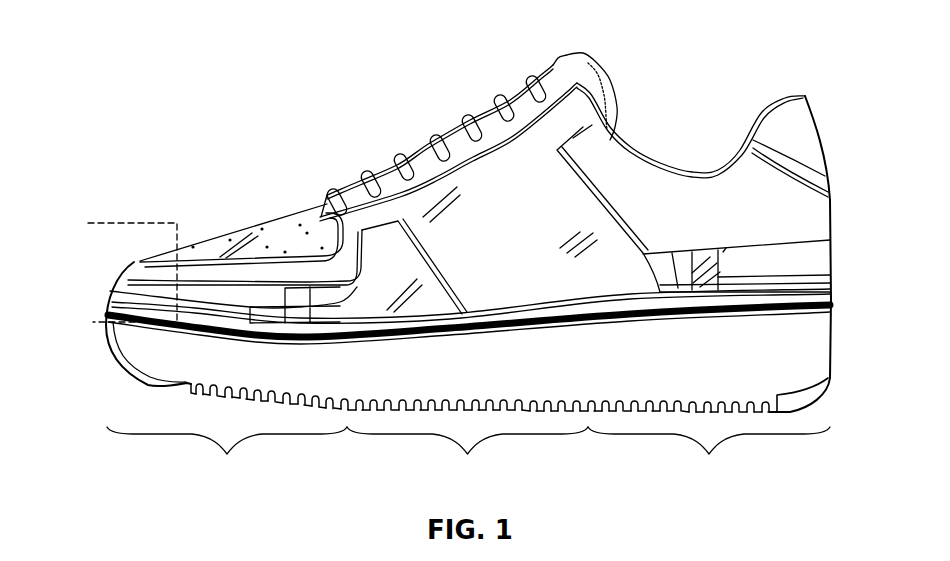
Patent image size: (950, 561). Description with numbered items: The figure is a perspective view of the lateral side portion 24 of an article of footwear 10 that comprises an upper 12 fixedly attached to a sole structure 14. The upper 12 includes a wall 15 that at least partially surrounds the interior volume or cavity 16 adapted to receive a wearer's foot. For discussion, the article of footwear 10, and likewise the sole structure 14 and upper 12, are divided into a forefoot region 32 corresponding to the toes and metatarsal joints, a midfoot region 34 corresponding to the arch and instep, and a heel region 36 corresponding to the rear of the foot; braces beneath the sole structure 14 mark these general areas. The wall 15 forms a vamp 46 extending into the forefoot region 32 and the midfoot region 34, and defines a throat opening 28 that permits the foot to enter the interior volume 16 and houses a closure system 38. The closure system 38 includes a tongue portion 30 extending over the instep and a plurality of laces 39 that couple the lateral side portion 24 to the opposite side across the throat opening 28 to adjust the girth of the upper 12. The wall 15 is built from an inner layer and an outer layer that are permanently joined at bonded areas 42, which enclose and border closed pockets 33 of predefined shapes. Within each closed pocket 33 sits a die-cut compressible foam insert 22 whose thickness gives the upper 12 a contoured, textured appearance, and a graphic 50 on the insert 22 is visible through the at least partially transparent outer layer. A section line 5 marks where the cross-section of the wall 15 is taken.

The section line 5- 5 is at (95, 223).
The article of footwear 10 is at (816, 38).
The upper 12 is at (845, 238).
The sole structure 14 is at (434, 373).
The wall 15 is at (798, 207).
The interior volume or cavity 16 is at (690, 160).
The insert 22 is at (276, 247).
The lateral side portion 24 is at (100, 345).
The throat opening 28 is at (379, 158).
The tongue portion 30 is at (596, 76).
The forefoot region 32 is at (227, 455).
The closed pocket 33 is at (464, 174).
The midfoot region 34 is at (467, 455).
The heel region 36 is at (709, 455).
The closure system 38 is at (475, 92).
The laces 39 is at (405, 152).
The bonded areas 42 is at (283, 270).
The vamp 46 is at (242, 222).
The graphic 50 is at (300, 205).